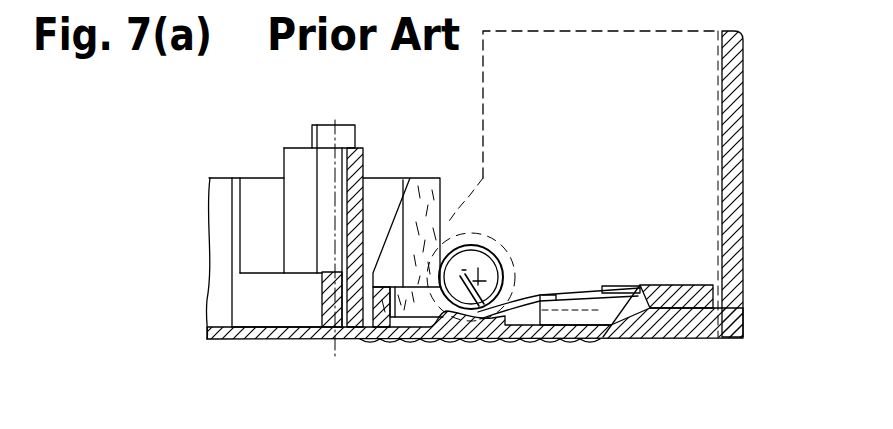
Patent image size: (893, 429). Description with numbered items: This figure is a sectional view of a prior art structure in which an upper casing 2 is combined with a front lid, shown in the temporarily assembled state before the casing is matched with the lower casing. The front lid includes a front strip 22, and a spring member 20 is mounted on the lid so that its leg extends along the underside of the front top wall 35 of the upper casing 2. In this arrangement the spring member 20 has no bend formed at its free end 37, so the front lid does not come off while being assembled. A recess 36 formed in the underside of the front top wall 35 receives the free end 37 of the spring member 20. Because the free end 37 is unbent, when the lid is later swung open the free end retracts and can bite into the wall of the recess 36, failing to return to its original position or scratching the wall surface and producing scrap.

The upper casing 2 is at (305, 343).
The spring member 20 is at (530, 297).
The front strip 22 is at (755, 116).
The front top wall 35 is at (548, 345).
The recess 36 is at (660, 285).
The free end 37 is at (650, 286).